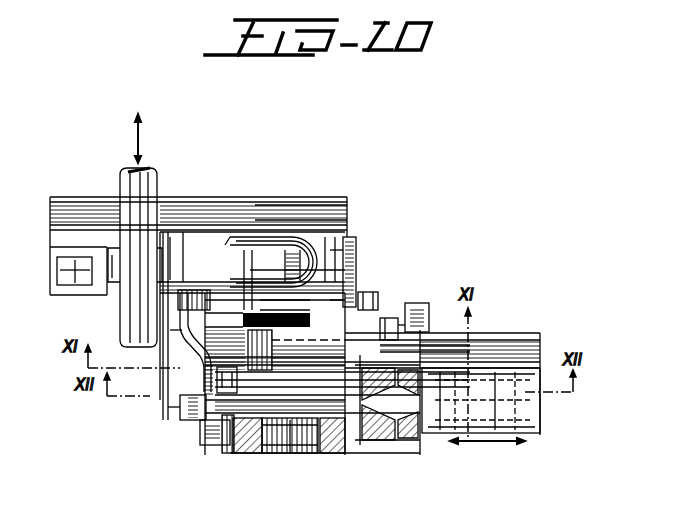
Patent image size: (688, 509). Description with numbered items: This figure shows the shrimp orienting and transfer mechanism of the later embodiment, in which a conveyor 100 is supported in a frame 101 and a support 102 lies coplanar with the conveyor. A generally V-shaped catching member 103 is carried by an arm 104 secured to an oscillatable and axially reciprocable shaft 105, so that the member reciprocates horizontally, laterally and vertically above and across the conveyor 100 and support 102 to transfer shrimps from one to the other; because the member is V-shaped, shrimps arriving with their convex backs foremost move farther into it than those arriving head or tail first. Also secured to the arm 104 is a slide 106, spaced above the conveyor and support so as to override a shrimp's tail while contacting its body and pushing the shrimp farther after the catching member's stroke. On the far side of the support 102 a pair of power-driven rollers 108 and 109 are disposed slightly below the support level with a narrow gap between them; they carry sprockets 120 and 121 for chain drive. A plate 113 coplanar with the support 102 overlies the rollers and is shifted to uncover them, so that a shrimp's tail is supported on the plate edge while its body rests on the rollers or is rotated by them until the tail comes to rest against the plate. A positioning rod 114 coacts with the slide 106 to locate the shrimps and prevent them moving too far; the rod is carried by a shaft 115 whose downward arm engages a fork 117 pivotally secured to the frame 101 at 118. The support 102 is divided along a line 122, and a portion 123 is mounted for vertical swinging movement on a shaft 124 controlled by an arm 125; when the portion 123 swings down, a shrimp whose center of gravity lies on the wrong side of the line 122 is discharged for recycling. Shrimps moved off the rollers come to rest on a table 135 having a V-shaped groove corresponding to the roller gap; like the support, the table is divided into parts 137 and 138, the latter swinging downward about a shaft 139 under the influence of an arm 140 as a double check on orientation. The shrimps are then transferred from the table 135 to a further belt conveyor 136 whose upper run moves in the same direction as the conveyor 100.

The conveyor 100 is at (64, 247).
The frame 101 is at (297, 210).
The support 102 is at (350, 237).
The V-shaped catching member 103 is at (312, 250).
The arm 104 is at (183, 232).
The oscillatable and axially reciprocable shaft 105 is at (135, 205).
The slide 106 is at (270, 323).
The roller 108 is at (313, 445).
The roller 109 is at (245, 455).
The plate 113 is at (275, 428).
The positioning rod 114 is at (226, 455).
The shaft 115 is at (198, 443).
The fork 117 is at (180, 330).
The pivot 118 is at (199, 310).
The sprocket 120 is at (182, 418).
The sprocket 121 is at (207, 370).
The dividing line 122 is at (257, 237).
The swingable portion of support 123 is at (265, 345).
The shaft 124 is at (365, 290).
The arm 125 is at (378, 315).
The table 135 is at (424, 428).
The belt conveyor 136 is at (522, 405).
The table part 137 is at (418, 357).
The swingable table part 138 is at (395, 430).
The shaft 139 is at (399, 316).
The arm 140 is at (418, 322).